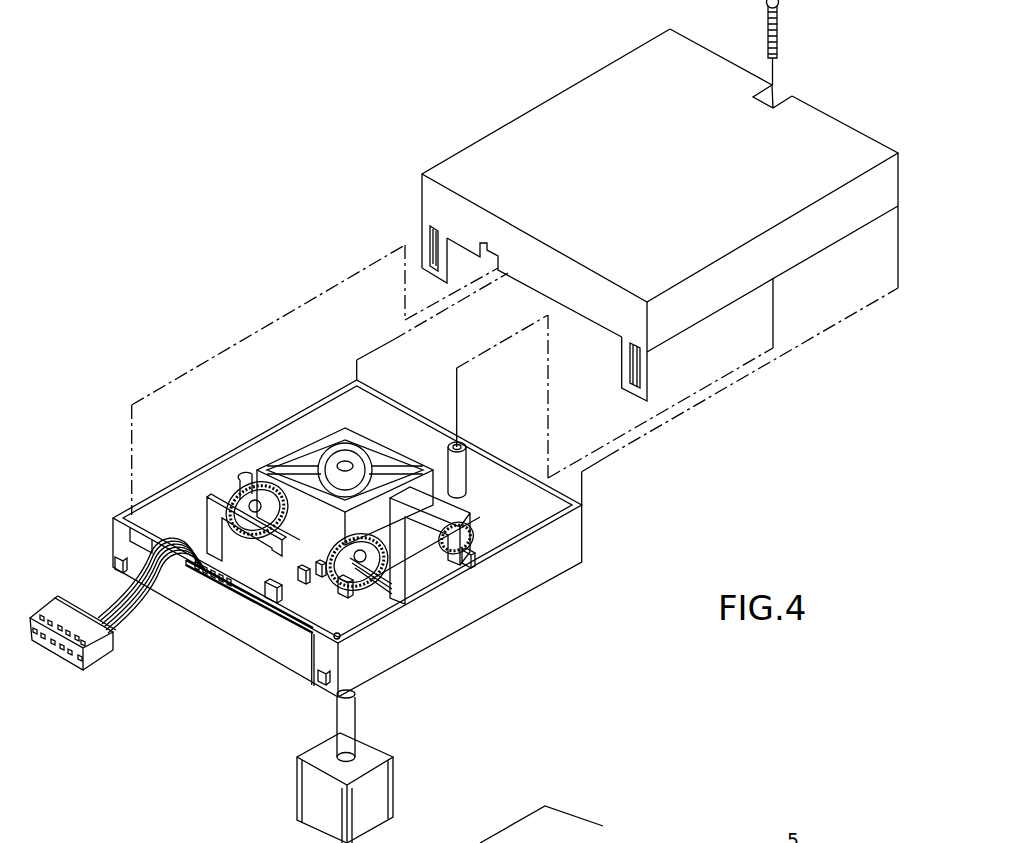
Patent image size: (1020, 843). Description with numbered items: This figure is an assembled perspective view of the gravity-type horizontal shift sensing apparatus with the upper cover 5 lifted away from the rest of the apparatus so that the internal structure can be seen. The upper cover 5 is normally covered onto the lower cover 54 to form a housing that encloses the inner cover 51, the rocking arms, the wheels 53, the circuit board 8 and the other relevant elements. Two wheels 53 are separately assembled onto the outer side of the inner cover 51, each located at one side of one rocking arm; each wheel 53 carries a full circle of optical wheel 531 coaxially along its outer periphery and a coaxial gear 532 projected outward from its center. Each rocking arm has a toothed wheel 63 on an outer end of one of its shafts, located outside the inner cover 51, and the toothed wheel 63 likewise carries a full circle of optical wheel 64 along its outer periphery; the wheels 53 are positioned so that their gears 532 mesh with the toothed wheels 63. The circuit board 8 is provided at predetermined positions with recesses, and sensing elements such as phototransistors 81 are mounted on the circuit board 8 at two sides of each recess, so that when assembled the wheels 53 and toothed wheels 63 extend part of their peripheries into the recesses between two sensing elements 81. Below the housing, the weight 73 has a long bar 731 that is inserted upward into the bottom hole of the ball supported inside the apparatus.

The upper cover 5 is at (541, 151).
The inner cover 51 is at (357, 437).
The wheel 53 is at (455, 444).
The optical wheel 531 is at (253, 503).
The gear 532 is at (232, 500).
The lower cover 54 is at (128, 542).
The toothed wheel 63 is at (200, 600).
The optical wheel 64 is at (212, 585).
The phototransistor 81 is at (272, 600).
The circuit board 8 is at (352, 672).
The weight 73 is at (377, 787).
The long bar 731 is at (336, 752).